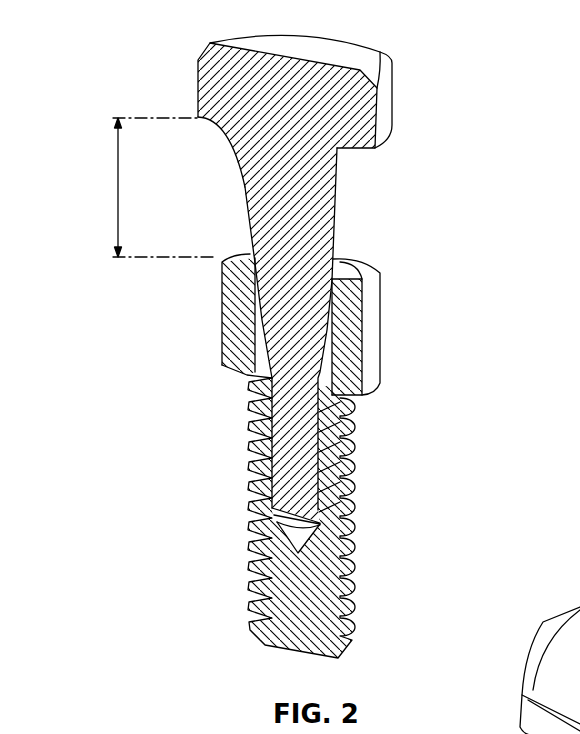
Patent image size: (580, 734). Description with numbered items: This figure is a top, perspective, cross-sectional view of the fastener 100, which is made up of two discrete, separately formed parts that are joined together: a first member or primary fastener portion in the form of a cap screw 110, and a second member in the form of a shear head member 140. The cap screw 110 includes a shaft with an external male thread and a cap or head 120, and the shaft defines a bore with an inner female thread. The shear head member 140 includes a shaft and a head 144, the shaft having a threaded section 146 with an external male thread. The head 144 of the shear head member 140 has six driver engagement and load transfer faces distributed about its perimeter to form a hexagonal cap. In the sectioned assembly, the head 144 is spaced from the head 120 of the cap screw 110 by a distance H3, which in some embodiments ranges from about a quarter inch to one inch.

The fastener 100 is at (104, 50).
The cap screw 110 is at (452, 515).
The head 120 is at (373, 328).
The shear head member 140 is at (465, 130).
The head 144 is at (352, 115).
The threaded section 146 is at (288, 420).
The distance H3 is at (117, 188).